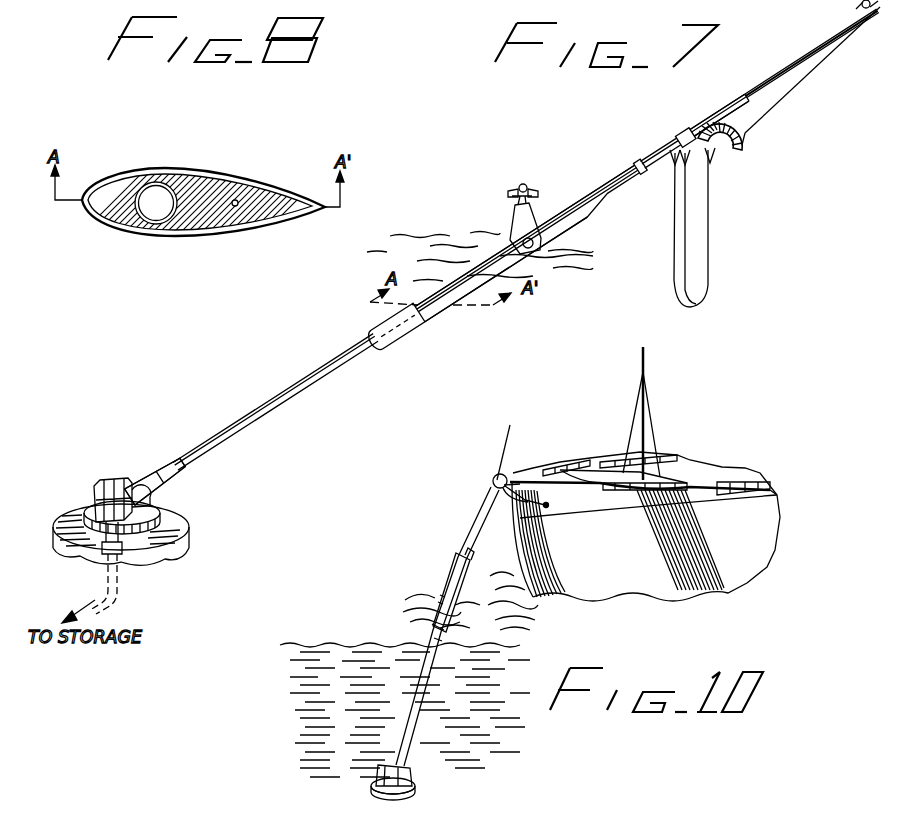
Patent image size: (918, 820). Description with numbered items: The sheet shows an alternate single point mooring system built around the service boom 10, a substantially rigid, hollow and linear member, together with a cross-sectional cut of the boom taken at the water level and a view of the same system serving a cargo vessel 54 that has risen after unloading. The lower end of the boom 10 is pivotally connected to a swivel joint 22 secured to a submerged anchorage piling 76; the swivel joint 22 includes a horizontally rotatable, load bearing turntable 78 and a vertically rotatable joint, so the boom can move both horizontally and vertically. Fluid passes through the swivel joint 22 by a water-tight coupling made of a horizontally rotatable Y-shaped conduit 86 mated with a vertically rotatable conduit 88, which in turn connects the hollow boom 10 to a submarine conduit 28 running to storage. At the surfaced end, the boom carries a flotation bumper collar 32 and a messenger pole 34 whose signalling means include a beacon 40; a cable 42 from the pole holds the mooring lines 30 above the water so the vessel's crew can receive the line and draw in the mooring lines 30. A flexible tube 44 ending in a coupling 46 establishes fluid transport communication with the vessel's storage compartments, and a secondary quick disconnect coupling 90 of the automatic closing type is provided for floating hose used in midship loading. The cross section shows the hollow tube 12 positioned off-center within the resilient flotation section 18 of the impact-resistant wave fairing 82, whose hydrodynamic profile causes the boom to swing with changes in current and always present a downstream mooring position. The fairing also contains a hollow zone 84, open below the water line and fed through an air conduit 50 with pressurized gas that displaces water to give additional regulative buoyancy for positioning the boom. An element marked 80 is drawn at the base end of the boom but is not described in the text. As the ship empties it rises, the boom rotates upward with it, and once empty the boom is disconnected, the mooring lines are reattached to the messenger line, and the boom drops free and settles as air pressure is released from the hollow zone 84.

In FIG. 7, the boom 10 is at (300, 399).
In FIG. 10, the boom 10 is at (453, 574).
In FIG. 8, the tube 12 is at (150, 181).
In FIG. 7, the tube 12 is at (623, 196).
In FIG. 8, the flotation section 18 is at (180, 176).
In FIG. 7, the swivel joint 22 is at (150, 494).
In FIG. 7, the submarine conduit 28 is at (118, 591).
In FIG. 7, the mooring lines 30 is at (673, 262).
In FIG. 10, the mooring lines 30 is at (500, 500).
In FIG. 7, the flotation bumper collar 32 is at (671, 128).
In FIG. 7, the messenger pole 34 is at (800, 50).
In FIG. 10, the messenger pole 34 is at (505, 448).
In FIG. 8, the beacon 40 is at (220, 240).
In FIG. 7, the cable 42 is at (813, 70).
In FIG. 7, the flexible tube 44 is at (742, 132).
In FIG. 7, the coupling 46 is at (743, 152).
In FIG. 8, the air conduit 50 is at (240, 202).
In FIG. 7, the air conduit 50 is at (638, 168).
In FIG. 10, the vessel 54 is at (667, 588).
In FIG. 7, the anchorage piling 76 is at (168, 541).
In FIG. 7, the turntable 78 is at (164, 516).
In FIG. 7, the pole end 80 is at (140, 478).
In FIG. 8, the wave fairing 82 is at (168, 239).
In FIG. 7, the wave fairing 82 is at (452, 316).
In FIG. 7, the hollow zone 84 is at (420, 323).
In FIG. 7, the Y-shaped conduit 86 is at (100, 554).
In FIG. 7, the vertically rotatable conduit 88 is at (138, 552).
In FIG. 7, the quick disconnect coupling 90 is at (576, 238).